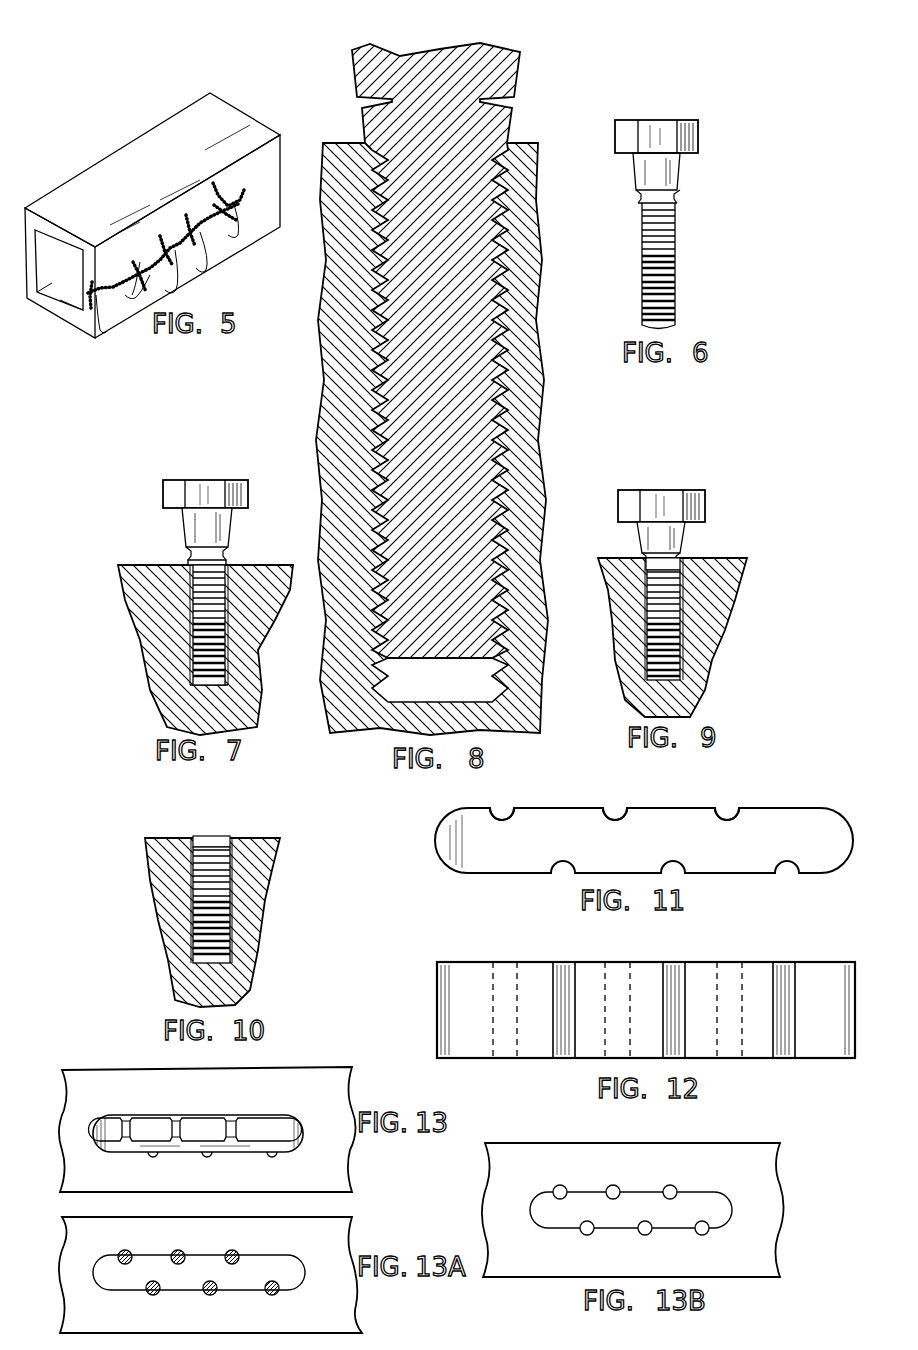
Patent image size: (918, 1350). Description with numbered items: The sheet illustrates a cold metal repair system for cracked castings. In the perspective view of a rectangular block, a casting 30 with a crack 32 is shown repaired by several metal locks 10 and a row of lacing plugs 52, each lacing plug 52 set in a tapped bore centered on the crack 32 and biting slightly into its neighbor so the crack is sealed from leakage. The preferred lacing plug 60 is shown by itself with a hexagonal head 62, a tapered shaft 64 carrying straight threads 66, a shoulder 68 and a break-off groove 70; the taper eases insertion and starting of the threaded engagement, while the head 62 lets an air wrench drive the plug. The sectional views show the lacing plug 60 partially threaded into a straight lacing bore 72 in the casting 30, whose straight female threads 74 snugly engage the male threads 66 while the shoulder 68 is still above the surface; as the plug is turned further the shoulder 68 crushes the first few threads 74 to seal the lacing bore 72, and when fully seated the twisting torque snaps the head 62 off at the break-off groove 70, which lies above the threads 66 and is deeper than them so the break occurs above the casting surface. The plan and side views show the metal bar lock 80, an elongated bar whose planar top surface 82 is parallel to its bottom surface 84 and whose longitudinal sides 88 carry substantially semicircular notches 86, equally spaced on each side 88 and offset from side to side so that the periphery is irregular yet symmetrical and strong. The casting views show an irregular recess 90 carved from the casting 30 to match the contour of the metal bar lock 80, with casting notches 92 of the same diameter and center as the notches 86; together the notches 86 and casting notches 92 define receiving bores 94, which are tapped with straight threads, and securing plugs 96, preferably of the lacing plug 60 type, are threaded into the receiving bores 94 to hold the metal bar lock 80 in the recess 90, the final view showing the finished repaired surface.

In FIG. 5, the metal lock 10 is at (98, 335).
In FIG. 5, the casting 30 is at (192, 134).
In FIG. 8, the casting 30 is at (436, 447).
In FIG. 7, the casting 30 is at (205, 652).
In FIG. 9, the casting 30 is at (675, 637).
In FIG. 10, the casting 30 is at (232, 922).
In FIG. 13, the casting 30 is at (311, 1096).
In FIG. 13A, the casting 30 is at (316, 1239).
In FIG. 13B, the casting 30 is at (741, 1169).
In FIG. 13, the crack 32 is at (198, 1120).
In FIG. 13A, the crack 32 is at (205, 1255).
In FIG. 13B, the crack 32 is at (635, 1192).
In FIG. 5, the lacing plug 52 is at (127, 238).
In FIG. 8, the lacing plug 60 is at (442, 330).
In FIG. 6, the lacing plug 60 is at (679, 196).
In FIG. 7, the lacing plug 60 is at (201, 559).
In FIG. 9, the lacing plug 60 is at (680, 583).
In FIG. 10, the lacing plug 60 is at (218, 874).
In FIG. 6, the head 62 is at (690, 136).
In FIG. 7, the head 62 is at (238, 480).
In FIG. 9, the head 62 is at (695, 504).
In FIG. 8, the tapered shaft 64 is at (445, 362).
In FIG. 6, the tapered shaft 64 is at (676, 232).
In FIG. 7, the tapered shaft 64 is at (222, 593).
In FIG. 9, the tapered shaft 64 is at (680, 608).
In FIG. 10, the tapered shaft 64 is at (230, 872).
In FIG. 8, the threads 66 is at (508, 302).
In FIG. 6, the threads 66 is at (676, 312).
In FIG. 7, the threads 66 is at (195, 660).
In FIG. 9, the threads 66 is at (648, 640).
In FIG. 10, the threads 66 is at (194, 930).
In FIG. 8, the shoulder 68 is at (505, 127).
In FIG. 6, the shoulder 68 is at (680, 204).
In FIG. 7, the shoulder 68 is at (225, 560).
In FIG. 9, the shoulder 68 is at (670, 560).
In FIG. 10, the shoulder 68 is at (218, 835).
In FIG. 8, the break-off groove 70 is at (390, 100).
In FIG. 6, the break-off groove 70 is at (638, 197).
In FIG. 7, the break-off groove 70 is at (190, 556).
In FIG. 9, the break-off groove 70 is at (646, 558).
In FIG. 8, the lacing bore 72 is at (425, 682).
In FIG. 7, the lacing bore 72 is at (235, 712).
In FIG. 8, the threads 74 is at (378, 360).
In FIG. 7, the threads 74 is at (218, 648).
In FIG. 9, the threads 74 is at (682, 637).
In FIG. 10, the threads 74 is at (232, 914).
In FIG. 11, the metal bar lock 80 is at (644, 830).
In FIG. 12, the metal bar lock 80 is at (617, 1012).
In FIG. 13A, the metal bar lock 80 is at (246, 1279).
In FIG. 13B, the metal bar lock 80 is at (662, 1221).
In FIG. 11, the top surface 82 is at (657, 839).
In FIG. 12, the top surface 82 is at (708, 962).
In FIG. 12, the bottom surface 84 is at (706, 1060).
In FIG. 11, the notches 86 is at (503, 806).
In FIG. 12, the notches 86 is at (566, 990).
In FIG. 11, the longitudinal sides 88 is at (565, 806).
In FIG. 13, the irregular recess 90 is at (285, 1143).
In FIG. 13, the casting notches 92 is at (126, 1115).
In FIG. 13A, the receiving bores 94 is at (176, 1252).
In FIG. 13B, the securing plugs 96 is at (612, 1186).